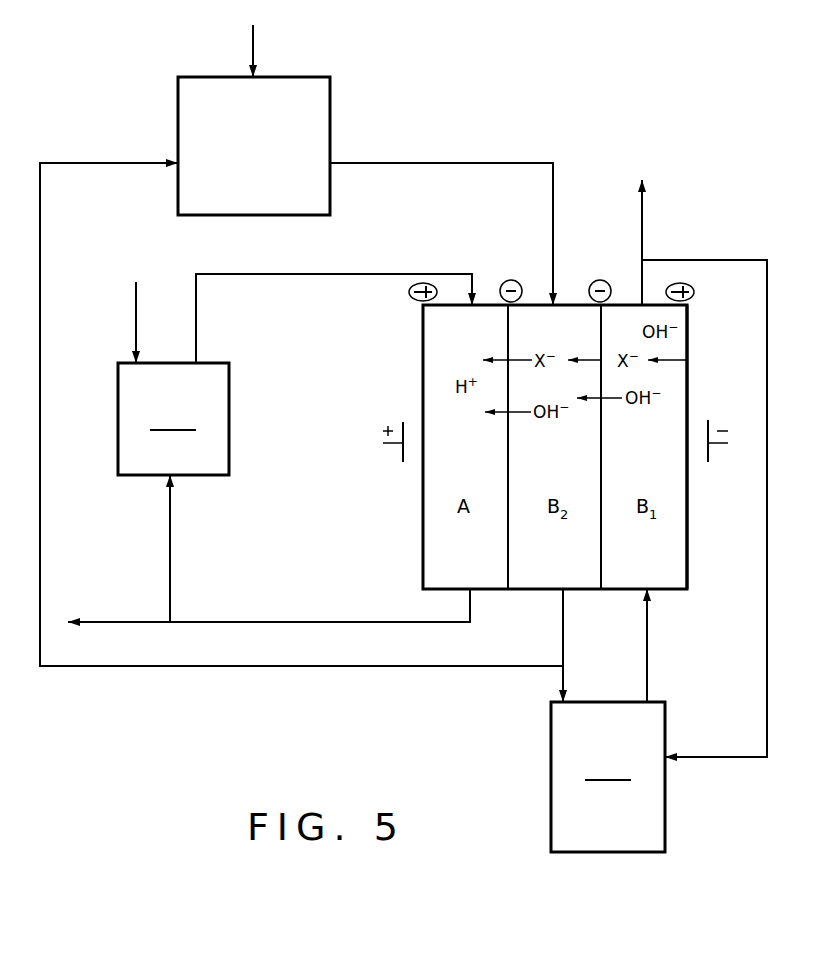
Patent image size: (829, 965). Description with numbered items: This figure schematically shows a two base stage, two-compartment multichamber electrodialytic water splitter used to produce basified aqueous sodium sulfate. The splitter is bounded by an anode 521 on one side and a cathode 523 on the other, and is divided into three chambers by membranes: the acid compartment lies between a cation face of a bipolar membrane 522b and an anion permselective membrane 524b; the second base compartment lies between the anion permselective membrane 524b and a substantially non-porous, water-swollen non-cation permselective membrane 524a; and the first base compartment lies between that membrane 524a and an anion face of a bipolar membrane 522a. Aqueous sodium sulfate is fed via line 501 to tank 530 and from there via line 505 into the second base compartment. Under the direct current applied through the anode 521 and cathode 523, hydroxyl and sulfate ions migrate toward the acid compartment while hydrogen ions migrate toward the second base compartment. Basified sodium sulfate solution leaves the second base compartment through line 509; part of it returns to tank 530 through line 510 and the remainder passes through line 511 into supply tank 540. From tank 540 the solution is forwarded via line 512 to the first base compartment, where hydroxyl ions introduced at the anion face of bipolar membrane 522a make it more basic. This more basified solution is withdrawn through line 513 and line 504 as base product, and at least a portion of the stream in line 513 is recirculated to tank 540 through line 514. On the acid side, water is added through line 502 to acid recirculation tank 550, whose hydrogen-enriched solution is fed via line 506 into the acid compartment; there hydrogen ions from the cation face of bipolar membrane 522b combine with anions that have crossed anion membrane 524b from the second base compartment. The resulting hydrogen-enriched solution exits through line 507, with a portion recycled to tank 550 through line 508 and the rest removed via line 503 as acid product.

The line 501 is at (253, 45).
The line 502 is at (135, 303).
The line 503 is at (115, 622).
The line 504 is at (642, 218).
The line 505 is at (503, 164).
The line 506 is at (320, 274).
The line 507 is at (255, 622).
The line 508 is at (170, 552).
The line 509 is at (563, 634).
The line 510 is at (183, 668).
The line 511 is at (560, 677).
The line 512 is at (650, 645).
The line 513 is at (641, 277).
The line 514 is at (767, 688).
The anode 521 is at (385, 443).
The bipolar membrane 522a is at (690, 565).
The bipolar membrane 522b is at (423, 540).
The cathode 523 is at (728, 446).
The substantially non-porous, water-swollen non-cation permselective membrane 524a is at (600, 555).
The anion permselective membrane 524b is at (507, 555).
The tank 530 is at (322, 108).
The supply tank 540 is at (608, 777).
The acid recirculation tank 550 is at (173, 419).